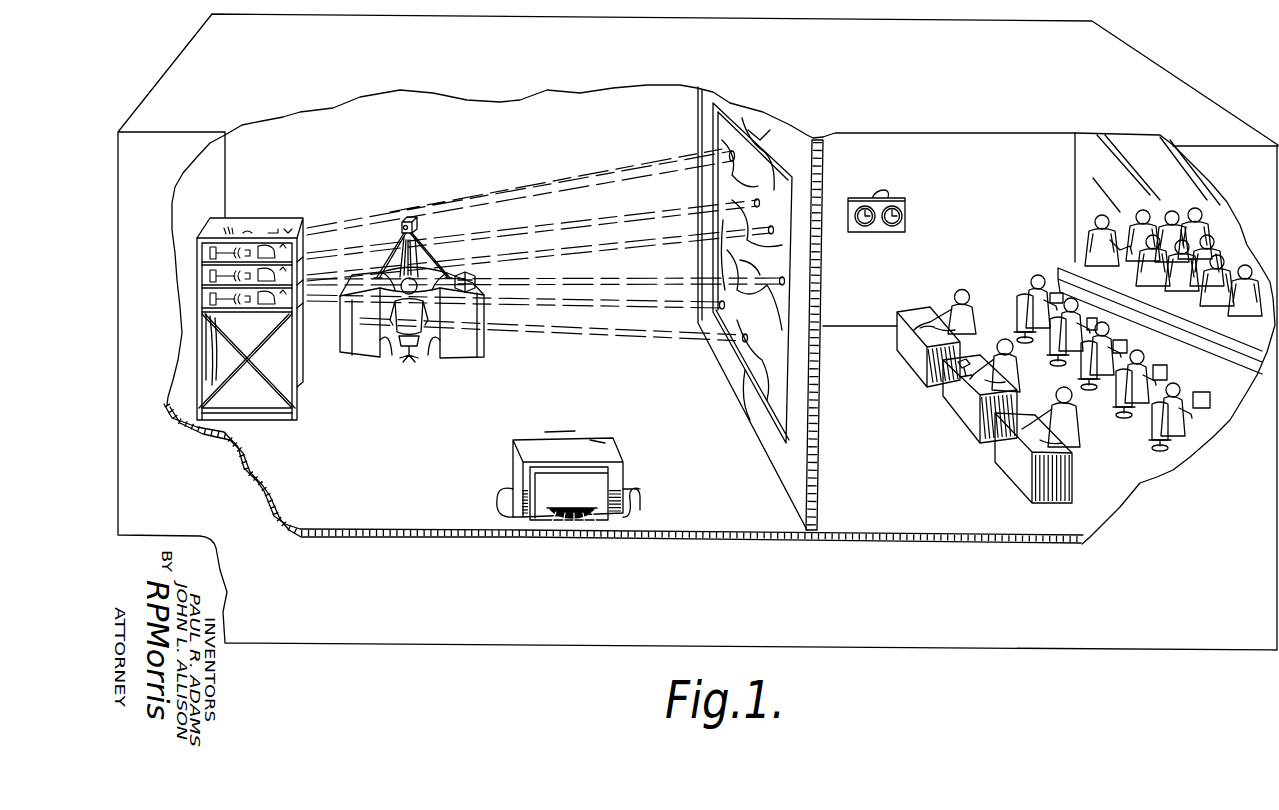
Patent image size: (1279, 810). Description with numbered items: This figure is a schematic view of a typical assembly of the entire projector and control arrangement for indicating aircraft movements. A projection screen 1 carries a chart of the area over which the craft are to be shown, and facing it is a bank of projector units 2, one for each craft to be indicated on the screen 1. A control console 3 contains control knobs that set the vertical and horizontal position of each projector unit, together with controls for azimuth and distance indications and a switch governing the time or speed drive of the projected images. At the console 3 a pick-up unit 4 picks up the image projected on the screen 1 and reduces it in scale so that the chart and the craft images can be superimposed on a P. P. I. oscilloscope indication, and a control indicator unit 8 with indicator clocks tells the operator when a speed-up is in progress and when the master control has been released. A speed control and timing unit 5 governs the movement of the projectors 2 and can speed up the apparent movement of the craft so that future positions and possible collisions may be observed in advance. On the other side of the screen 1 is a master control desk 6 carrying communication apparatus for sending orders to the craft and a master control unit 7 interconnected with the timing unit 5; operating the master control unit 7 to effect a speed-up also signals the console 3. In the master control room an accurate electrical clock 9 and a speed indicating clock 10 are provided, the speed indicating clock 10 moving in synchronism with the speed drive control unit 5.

The projection screen 1 is at (777, 385).
The bank of projector units 2 is at (260, 227).
The control console 3 is at (472, 338).
The pick-up unit 4 is at (420, 228).
The speed control and timing unit 5 is at (525, 447).
The master control desk 6 is at (968, 420).
The master control unit 7 is at (974, 374).
The control indicator unit 8 is at (474, 277).
The accurate electrical clock 9 is at (865, 227).
The speed indicating clock 10 is at (892, 227).